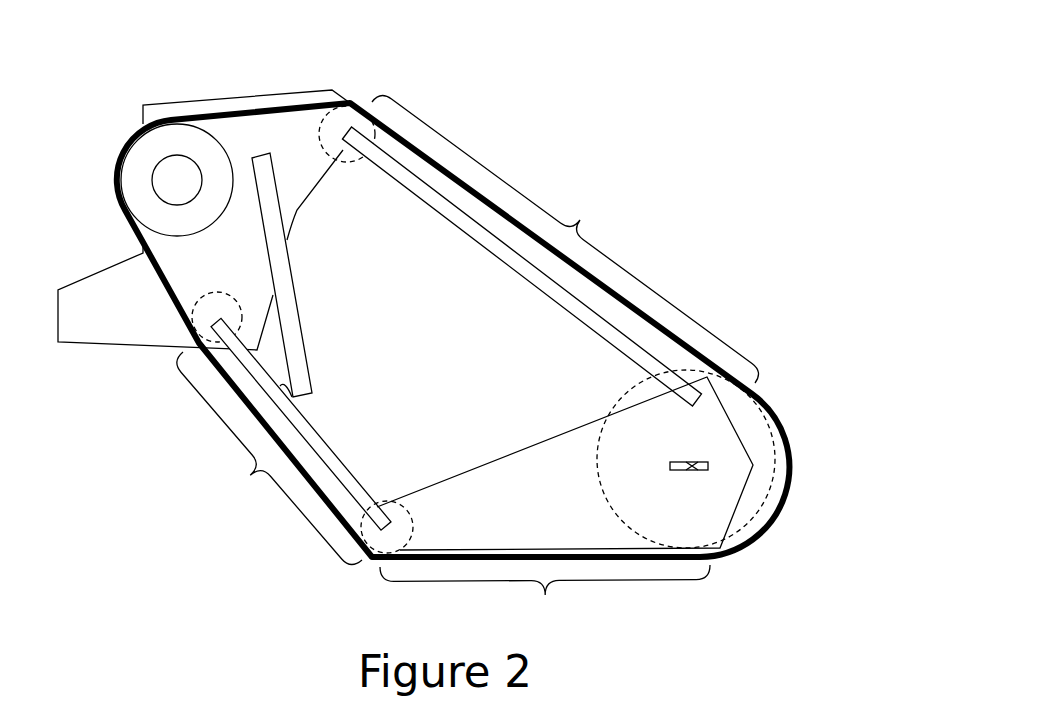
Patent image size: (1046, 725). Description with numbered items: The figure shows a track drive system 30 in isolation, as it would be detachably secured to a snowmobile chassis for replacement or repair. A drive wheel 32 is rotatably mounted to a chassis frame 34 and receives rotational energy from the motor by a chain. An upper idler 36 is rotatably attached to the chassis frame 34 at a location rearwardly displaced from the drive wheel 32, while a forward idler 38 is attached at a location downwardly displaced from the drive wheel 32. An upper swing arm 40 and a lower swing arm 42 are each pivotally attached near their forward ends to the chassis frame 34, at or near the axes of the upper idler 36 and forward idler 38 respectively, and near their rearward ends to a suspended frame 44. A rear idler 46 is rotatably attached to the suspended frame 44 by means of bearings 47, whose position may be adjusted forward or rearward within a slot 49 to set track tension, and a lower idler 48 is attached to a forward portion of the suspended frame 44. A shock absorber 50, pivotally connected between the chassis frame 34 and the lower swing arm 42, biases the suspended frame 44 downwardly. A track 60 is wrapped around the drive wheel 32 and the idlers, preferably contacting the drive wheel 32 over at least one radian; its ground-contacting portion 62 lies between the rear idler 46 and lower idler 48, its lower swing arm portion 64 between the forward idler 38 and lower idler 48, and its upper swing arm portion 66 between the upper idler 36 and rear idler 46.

The track drive system 30 is at (697, 133).
The drive wheel 32 is at (222, 148).
The chassis frame 34 is at (307, 90).
The upper idler 36 is at (325, 157).
The forward idler 38 is at (193, 307).
The upper swing arm 40 is at (457, 228).
The lower swing arm 42 is at (322, 440).
The suspended frame 44 is at (483, 463).
The rear idler 46 is at (594, 466).
The bearings 47 is at (690, 462).
The lower idler 48 is at (413, 528).
The slot 49 is at (707, 468).
The shock absorber 50 is at (295, 283).
The track 60 is at (789, 443).
The ground-contacting portion 62 is at (545, 595).
The lower swing arm portion 64 is at (269, 458).
The upper swing arm portion 66 is at (565, 239).